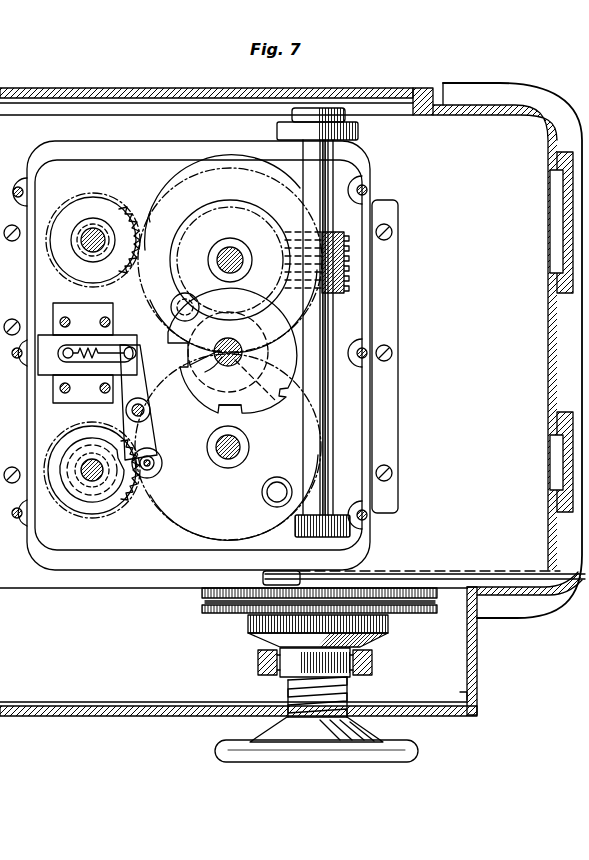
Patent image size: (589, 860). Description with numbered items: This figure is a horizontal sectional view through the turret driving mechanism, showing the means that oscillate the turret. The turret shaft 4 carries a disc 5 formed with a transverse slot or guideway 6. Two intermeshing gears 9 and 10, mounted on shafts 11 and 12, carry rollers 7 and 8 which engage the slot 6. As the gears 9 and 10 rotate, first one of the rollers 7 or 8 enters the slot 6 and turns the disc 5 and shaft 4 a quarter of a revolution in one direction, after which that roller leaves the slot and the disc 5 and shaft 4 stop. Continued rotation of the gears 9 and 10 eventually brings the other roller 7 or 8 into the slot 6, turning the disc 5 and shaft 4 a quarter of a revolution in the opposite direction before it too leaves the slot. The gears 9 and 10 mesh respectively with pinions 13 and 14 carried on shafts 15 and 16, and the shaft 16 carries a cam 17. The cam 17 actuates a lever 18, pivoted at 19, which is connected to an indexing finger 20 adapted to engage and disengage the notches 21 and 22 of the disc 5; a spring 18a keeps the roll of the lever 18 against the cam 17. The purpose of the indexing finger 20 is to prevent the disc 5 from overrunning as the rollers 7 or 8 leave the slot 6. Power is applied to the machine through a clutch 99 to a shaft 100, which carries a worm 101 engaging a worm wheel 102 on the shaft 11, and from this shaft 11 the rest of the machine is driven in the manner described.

The shaft 4 is at (236, 347).
The disc 5 is at (258, 350).
The transverse slot 6 is at (275, 392).
The roller 7 is at (188, 293).
The roller 8 is at (261, 495).
The gear 9 is at (150, 212).
The gear 10 is at (150, 488).
The shaft 11 is at (231, 250).
The shaft 12 is at (214, 451).
The pinion 13 is at (125, 206).
The pinion 14 is at (128, 503).
The shaft 15 is at (90, 233).
The shaft 16 is at (88, 477).
The cam 17 is at (98, 500).
The lever 18 is at (128, 388).
The spring 18a is at (78, 310).
The pivot 19 is at (150, 410).
The indexing finger 20 is at (148, 343).
The notch 21 is at (231, 375).
The notch 22 is at (238, 414).
The clutch 99 is at (360, 641).
The shaft 100 is at (290, 690).
The worm 101 is at (338, 243).
The worm wheel 102 is at (255, 205).